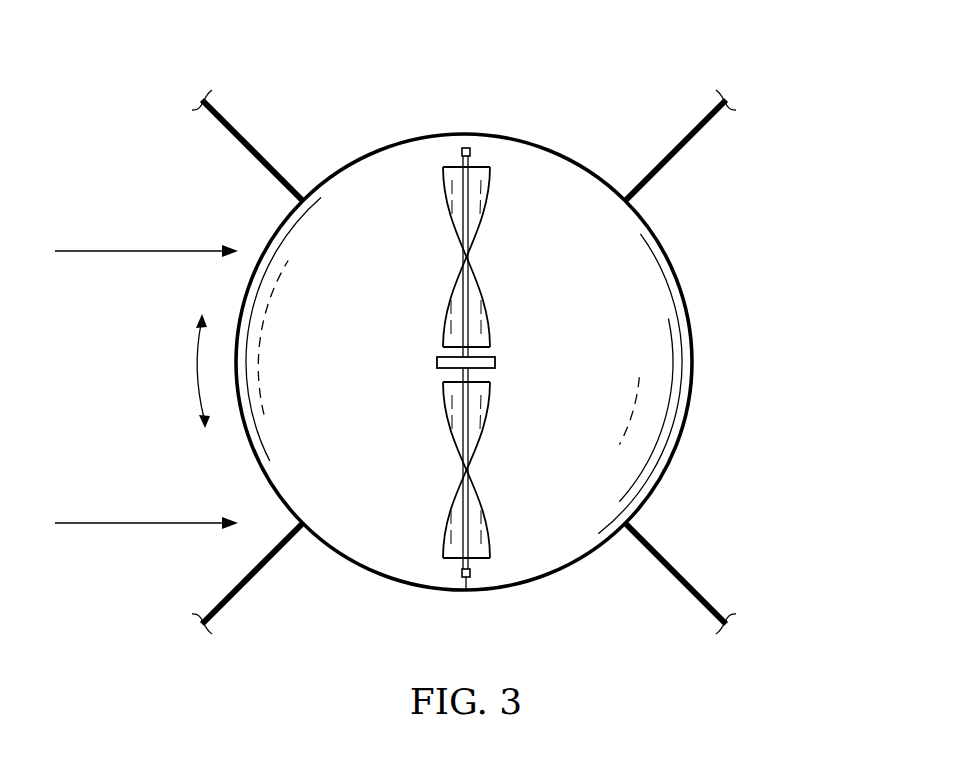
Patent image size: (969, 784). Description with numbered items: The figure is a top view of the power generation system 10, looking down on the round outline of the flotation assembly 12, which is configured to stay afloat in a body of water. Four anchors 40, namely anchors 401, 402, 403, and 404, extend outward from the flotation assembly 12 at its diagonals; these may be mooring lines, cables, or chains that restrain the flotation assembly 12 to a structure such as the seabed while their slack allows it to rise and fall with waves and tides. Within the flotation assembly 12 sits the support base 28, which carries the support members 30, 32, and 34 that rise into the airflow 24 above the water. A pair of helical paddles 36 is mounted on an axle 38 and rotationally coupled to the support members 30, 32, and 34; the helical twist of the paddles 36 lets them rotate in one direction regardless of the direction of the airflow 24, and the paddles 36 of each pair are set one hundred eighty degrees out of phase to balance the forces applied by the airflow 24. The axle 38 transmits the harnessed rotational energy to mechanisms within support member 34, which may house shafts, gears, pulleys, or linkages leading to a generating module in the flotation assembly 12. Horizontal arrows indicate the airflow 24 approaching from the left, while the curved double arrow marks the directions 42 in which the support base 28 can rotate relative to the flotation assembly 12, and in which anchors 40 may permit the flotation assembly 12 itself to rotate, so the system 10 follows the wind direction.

The power generation system 10 is at (821, 166).
The flotation assembly 12 is at (701, 300).
The airflow 24 is at (138, 250).
The support base 28 is at (556, 166).
The support member 30 is at (466, 590).
The support member 32 is at (467, 147).
The support member 34 is at (496, 362).
The helical paddles 36 is at (492, 197).
The axle 38 is at (463, 572).
The anchors 40 is at (453, 365).
The anchor 401 is at (674, 575).
The anchor 402 is at (255, 577).
The anchor 403 is at (684, 153).
The anchor 404 is at (251, 147).
The directions 42 is at (196, 372).